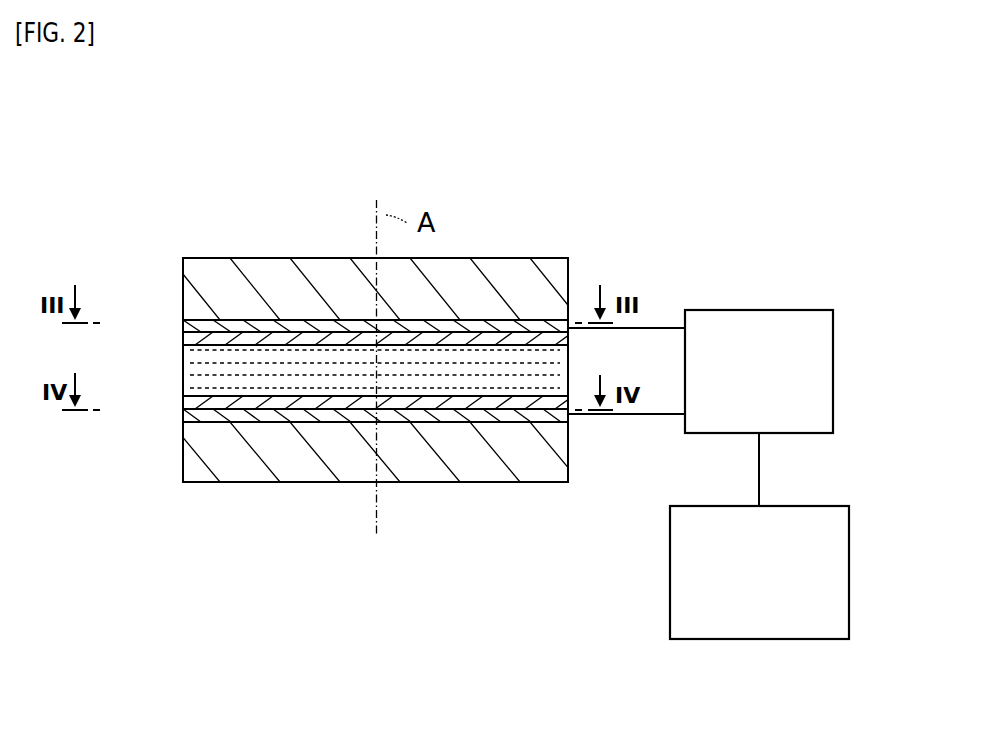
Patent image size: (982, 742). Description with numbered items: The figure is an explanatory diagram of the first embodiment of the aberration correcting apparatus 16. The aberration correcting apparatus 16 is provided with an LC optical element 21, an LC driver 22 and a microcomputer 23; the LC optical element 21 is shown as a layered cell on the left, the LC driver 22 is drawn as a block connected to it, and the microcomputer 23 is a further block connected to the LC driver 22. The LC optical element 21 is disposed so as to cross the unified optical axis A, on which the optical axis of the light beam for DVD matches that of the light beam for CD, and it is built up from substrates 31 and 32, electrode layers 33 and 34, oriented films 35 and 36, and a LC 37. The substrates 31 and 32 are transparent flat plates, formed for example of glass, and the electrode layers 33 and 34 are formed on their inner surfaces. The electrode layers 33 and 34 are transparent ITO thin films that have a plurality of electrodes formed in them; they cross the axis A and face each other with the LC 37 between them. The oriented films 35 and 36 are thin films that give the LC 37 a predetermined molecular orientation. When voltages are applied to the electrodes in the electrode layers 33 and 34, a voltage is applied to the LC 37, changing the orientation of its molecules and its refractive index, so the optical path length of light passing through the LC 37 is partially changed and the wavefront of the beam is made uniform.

The aberration correcting apparatus 16 is at (665, 207).
The LC optical element 21 is at (205, 241).
The LC driver 22 is at (758, 310).
The microcomputer 23 is at (759, 639).
The substrate 31 is at (300, 257).
The substrate 32 is at (303, 483).
The electrode layer 33 is at (183, 326).
The electrode layer 34 is at (183, 416).
The oriented film 35 is at (183, 340).
The oriented film 36 is at (183, 401).
The LC 37 is at (568, 352).